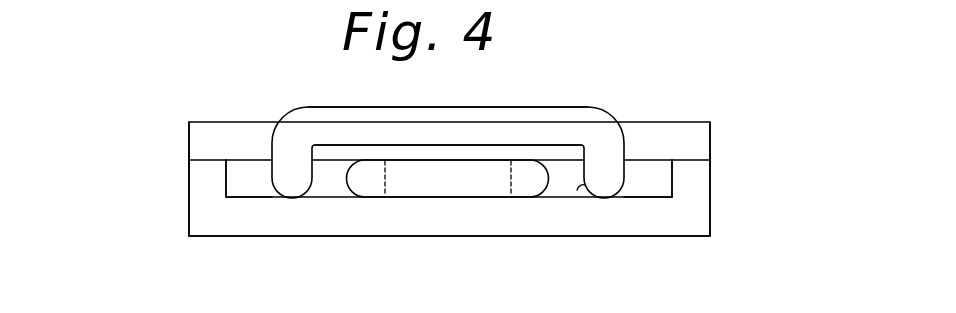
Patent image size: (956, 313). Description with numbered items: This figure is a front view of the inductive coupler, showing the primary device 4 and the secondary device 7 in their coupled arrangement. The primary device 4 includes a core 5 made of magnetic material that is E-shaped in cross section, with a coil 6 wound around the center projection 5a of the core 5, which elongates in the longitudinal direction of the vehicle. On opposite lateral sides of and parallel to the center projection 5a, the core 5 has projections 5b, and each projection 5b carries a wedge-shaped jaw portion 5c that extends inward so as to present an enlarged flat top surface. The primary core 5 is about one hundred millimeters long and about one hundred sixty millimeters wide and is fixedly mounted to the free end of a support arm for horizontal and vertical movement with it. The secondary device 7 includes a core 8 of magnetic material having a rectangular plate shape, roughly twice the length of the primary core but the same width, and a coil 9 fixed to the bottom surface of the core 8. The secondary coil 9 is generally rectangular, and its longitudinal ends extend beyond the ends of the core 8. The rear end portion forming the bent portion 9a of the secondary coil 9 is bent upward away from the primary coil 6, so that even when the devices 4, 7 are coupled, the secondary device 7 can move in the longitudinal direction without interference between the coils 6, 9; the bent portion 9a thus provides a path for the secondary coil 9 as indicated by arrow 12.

The primary device 4 is at (327, 246).
The core 5 is at (472, 235).
The center projection 5a is at (511, 198).
The projections 5b is at (190, 182).
The wedge-shaped jaw portion 5c is at (238, 161).
The coil 6 is at (375, 198).
The secondary device 7 is at (238, 117).
The core 8 is at (640, 122).
The coil 9 is at (470, 100).
The bent portion 9a is at (520, 126).
The arrow 12 is at (584, 186).